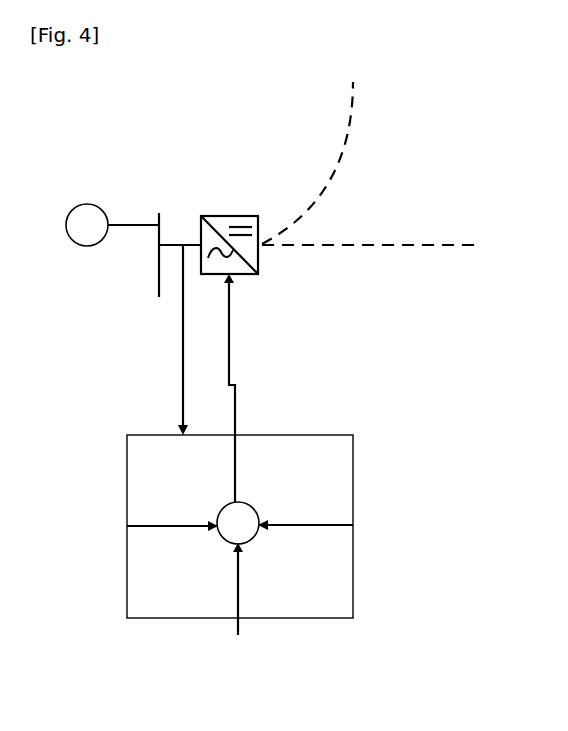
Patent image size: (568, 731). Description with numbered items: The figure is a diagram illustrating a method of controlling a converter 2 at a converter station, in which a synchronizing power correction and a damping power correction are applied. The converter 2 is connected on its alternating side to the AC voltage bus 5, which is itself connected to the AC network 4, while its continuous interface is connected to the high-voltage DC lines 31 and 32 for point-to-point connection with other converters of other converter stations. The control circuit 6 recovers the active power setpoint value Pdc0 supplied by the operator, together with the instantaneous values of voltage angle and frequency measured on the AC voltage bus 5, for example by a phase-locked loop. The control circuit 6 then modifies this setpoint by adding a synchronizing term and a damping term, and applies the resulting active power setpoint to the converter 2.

The converter 2 is at (230, 216).
The AC network 4 is at (87, 247).
The AC voltage bus 5 is at (159, 297).
The control circuit 6 is at (127, 543).
The high-voltage DC line 31 is at (327, 188).
The high-voltage DC line 32 is at (373, 247).